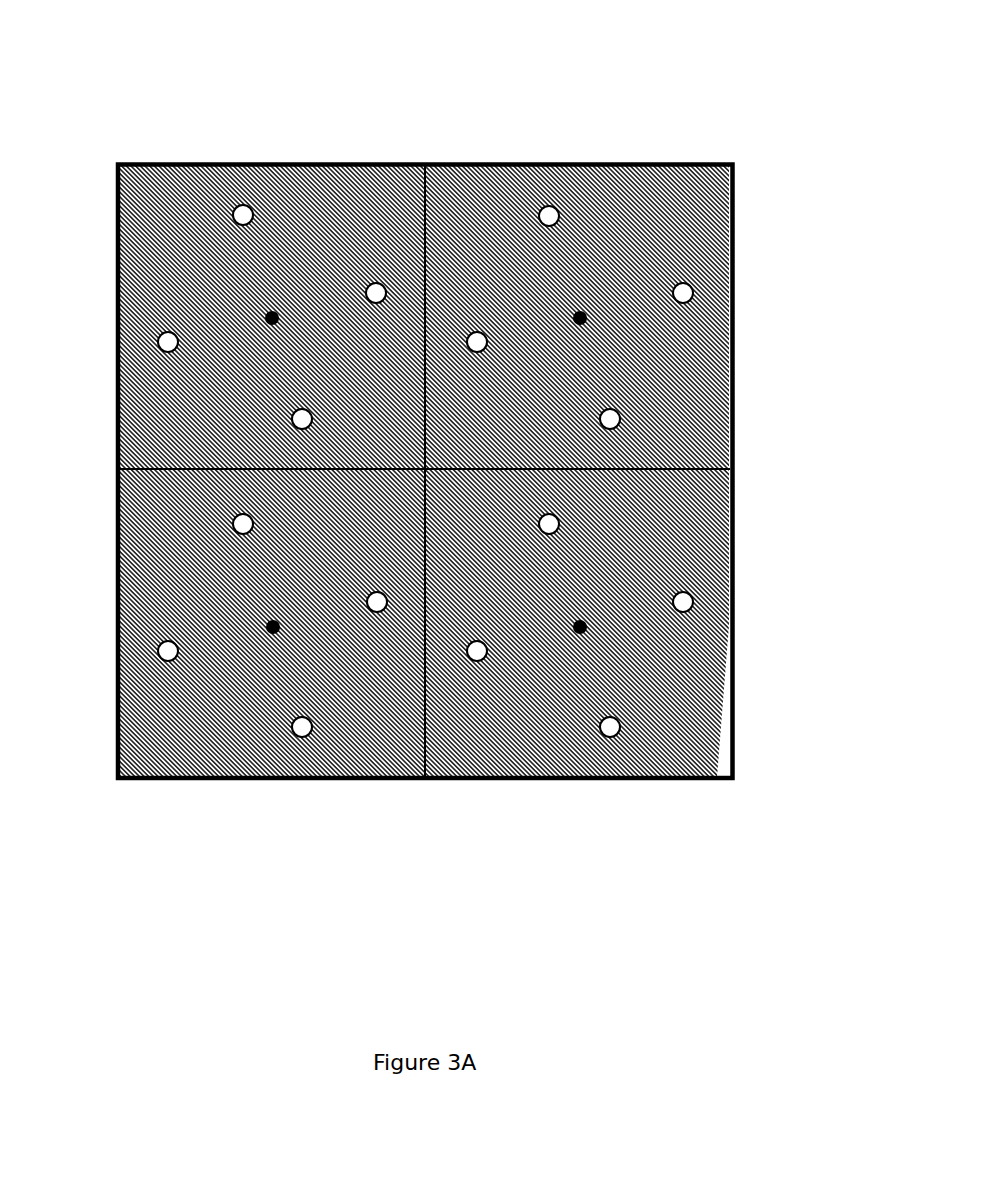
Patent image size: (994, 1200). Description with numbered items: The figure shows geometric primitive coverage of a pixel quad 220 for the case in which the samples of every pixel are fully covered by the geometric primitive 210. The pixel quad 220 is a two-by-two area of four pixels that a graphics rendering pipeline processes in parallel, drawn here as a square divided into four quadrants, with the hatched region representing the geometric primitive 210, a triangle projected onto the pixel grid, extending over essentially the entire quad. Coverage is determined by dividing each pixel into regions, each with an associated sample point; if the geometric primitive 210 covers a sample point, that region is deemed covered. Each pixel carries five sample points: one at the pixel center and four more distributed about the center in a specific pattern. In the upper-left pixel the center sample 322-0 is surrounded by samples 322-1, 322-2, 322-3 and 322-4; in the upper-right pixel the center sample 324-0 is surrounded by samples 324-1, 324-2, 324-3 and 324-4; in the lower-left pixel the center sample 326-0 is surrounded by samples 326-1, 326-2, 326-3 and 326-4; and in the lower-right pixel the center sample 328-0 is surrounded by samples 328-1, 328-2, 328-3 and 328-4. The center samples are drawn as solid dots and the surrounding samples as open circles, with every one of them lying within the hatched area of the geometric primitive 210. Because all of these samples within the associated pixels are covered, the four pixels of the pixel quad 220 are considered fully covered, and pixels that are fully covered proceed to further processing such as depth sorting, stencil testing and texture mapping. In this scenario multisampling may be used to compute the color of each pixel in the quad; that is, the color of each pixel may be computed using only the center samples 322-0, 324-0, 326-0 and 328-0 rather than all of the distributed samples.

The geometric primitive 210 is at (670, 733).
The pixel quad 220 is at (398, 163).
The center sample 322-0 is at (262, 318).
The sample 322-1 is at (233, 215).
The sample 322-2 is at (368, 290).
The sample 322-3 is at (158, 344).
The sample 322-4 is at (293, 424).
The center sample 324-0 is at (587, 317).
The sample 324-1 is at (541, 208).
The sample 324-2 is at (692, 290).
The sample 324-3 is at (473, 332).
The sample 324-4 is at (619, 416).
The center sample 326-0 is at (264, 627).
The sample 326-1 is at (233, 528).
The sample 326-2 is at (379, 612).
The sample 326-3 is at (158, 652).
The sample 326-4 is at (304, 737).
The center sample 328-0 is at (589, 626).
The sample 328-1 is at (559, 523).
The sample 328-2 is at (693, 598).
The sample 328-3 is at (479, 661).
The sample 328-4 is at (611, 737).